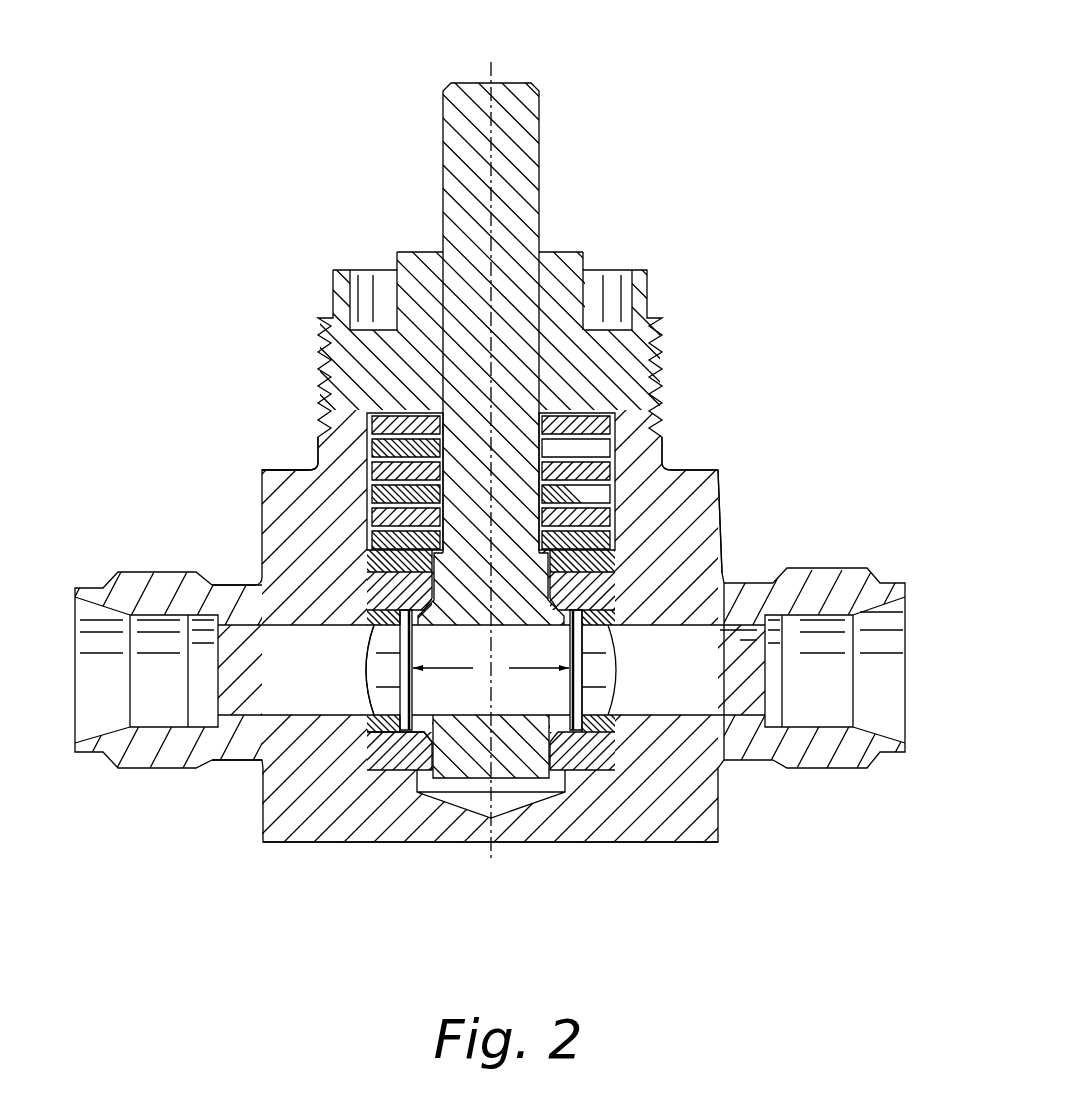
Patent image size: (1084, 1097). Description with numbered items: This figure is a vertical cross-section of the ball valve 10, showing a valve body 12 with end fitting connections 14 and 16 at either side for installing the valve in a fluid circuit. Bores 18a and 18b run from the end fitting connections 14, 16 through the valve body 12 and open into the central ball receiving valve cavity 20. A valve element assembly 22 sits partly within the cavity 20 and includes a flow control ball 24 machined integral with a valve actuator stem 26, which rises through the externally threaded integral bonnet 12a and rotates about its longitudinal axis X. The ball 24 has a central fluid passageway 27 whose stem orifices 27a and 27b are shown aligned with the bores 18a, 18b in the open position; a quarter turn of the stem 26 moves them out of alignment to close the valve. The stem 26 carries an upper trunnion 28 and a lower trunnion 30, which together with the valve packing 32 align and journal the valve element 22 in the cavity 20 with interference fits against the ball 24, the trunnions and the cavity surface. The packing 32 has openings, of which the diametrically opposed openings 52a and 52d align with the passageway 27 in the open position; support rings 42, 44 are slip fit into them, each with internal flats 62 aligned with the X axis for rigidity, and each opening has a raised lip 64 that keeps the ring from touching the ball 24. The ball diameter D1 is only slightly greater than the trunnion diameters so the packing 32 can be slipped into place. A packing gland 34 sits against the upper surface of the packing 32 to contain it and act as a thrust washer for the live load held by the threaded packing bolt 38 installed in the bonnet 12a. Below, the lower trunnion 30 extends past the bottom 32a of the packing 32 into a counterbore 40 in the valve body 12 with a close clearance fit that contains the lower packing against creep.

The ball valve 10 is at (752, 185).
The valve body 12 is at (703, 465).
The integral bonnet 12a is at (664, 370).
The end fitting connection 14 is at (106, 530).
The end fitting connection 16 is at (880, 527).
The valve body bore 18a is at (260, 697).
The valve body bore 18b is at (738, 700).
The valve cavity 20 is at (373, 733).
The valve element assembly 22 is at (591, 808).
The flow control ball 24 is at (570, 613).
The valve actuator stem 26 is at (539, 136).
The fluid passageway 27 is at (448, 702).
The stem orifice 27a is at (432, 647).
The stem orifice 27b is at (561, 648).
The upper trunnion 28 is at (617, 545).
The lower trunnion 30 is at (513, 760).
The valve packing 32 is at (365, 587).
The bottom of the packing 32a is at (397, 738).
The packing gland 34 is at (317, 470).
The threaded packing bolt 38 is at (563, 312).
The counterbore 40 is at (433, 790).
The support ring 42 is at (377, 707).
The support ring 44 is at (588, 700).
The packing opening 52a is at (377, 598).
The packing opening 52d is at (660, 578).
The internal flat 62 is at (388, 677).
The circumferentially raised lip 64 is at (425, 613).
The longitudinal axis X is at (490, 63).
The ball diameter D1 is at (491, 668).